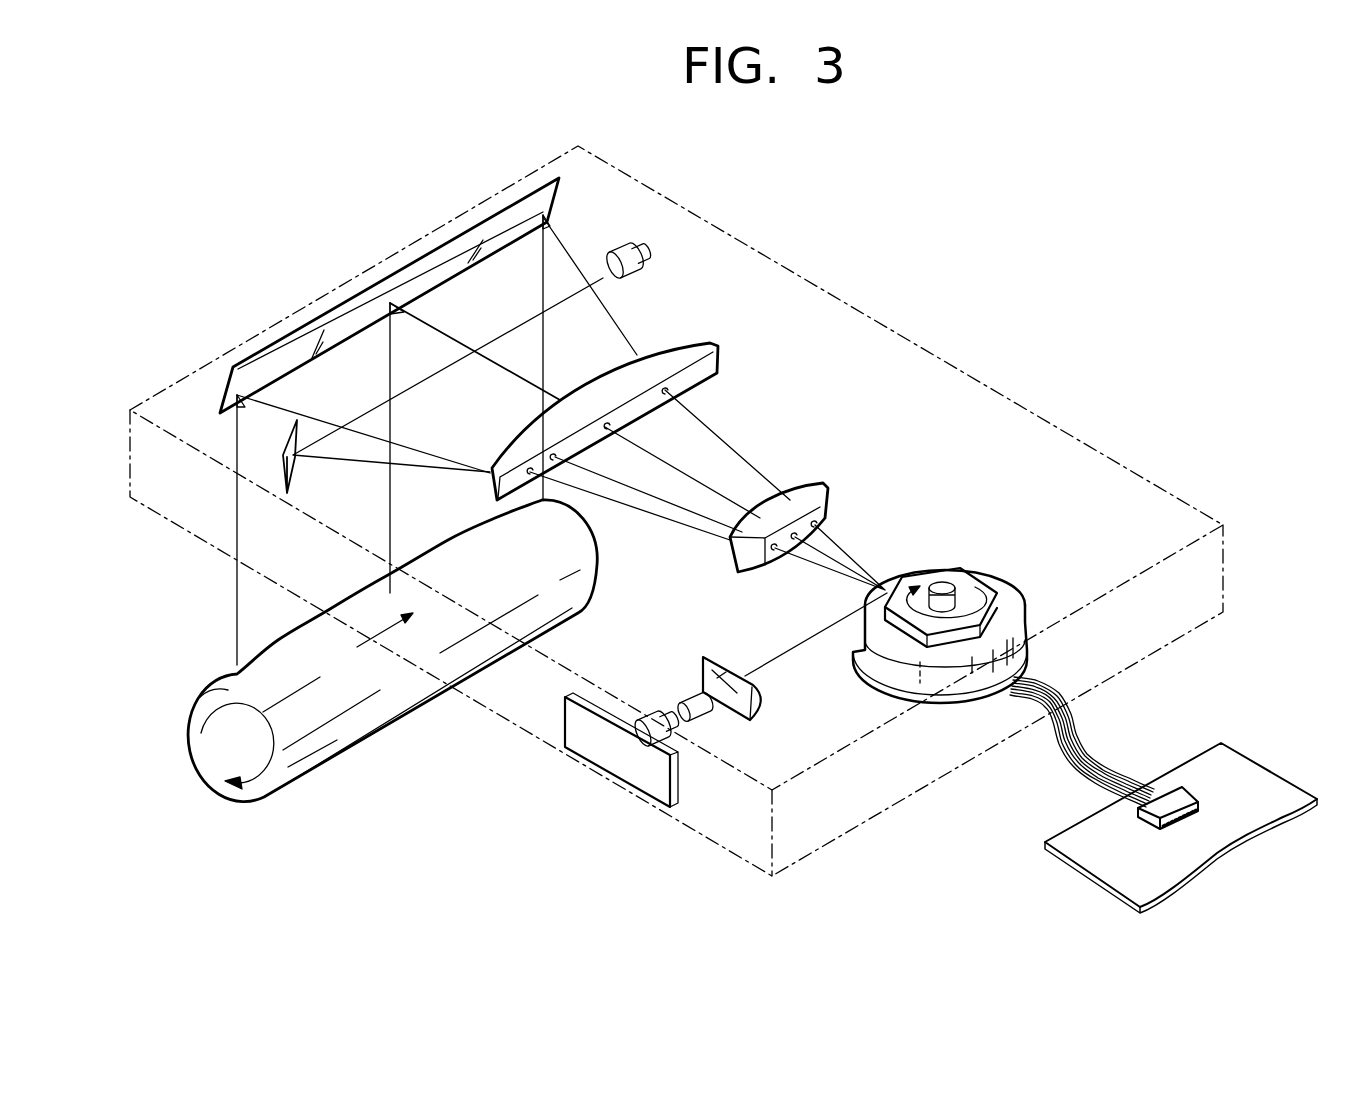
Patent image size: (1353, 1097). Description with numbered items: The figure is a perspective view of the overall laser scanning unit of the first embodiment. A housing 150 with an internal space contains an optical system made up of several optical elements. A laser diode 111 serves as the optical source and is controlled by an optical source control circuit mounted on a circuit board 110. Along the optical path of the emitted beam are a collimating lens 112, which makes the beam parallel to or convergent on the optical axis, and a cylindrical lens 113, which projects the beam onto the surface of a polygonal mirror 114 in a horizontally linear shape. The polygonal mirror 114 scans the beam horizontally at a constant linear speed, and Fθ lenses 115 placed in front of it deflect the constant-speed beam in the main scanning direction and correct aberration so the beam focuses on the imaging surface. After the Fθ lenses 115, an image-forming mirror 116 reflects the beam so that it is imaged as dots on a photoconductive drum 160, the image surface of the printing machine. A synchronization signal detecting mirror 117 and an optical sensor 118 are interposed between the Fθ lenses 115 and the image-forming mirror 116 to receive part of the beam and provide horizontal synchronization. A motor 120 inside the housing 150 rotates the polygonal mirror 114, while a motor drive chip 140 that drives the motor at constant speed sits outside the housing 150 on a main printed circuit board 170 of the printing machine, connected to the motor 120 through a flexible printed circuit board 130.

The circuit board 110 is at (623, 770).
The laser diode 111 is at (675, 730).
The collimating lens 112 is at (707, 713).
The cylindrical lens 113 is at (758, 702).
The polygonal mirror 114 is at (1037, 650).
The Fθ lenses 115 is at (718, 358).
The image-forming mirror 116 is at (533, 190).
The synchronization signal detecting mirror 117 is at (285, 472).
The optical sensor 118 is at (647, 250).
The motor 120 is at (1002, 711).
The flexible printed circuit board 130 is at (1060, 755).
The motor drive chip 140 is at (1170, 802).
The housing 150 is at (1140, 475).
The photoconductive drum 160 is at (347, 737).
The main printed circuit board 170 is at (1255, 770).